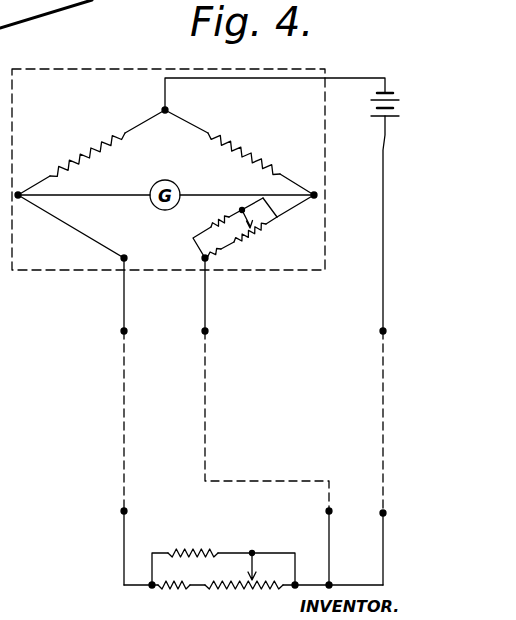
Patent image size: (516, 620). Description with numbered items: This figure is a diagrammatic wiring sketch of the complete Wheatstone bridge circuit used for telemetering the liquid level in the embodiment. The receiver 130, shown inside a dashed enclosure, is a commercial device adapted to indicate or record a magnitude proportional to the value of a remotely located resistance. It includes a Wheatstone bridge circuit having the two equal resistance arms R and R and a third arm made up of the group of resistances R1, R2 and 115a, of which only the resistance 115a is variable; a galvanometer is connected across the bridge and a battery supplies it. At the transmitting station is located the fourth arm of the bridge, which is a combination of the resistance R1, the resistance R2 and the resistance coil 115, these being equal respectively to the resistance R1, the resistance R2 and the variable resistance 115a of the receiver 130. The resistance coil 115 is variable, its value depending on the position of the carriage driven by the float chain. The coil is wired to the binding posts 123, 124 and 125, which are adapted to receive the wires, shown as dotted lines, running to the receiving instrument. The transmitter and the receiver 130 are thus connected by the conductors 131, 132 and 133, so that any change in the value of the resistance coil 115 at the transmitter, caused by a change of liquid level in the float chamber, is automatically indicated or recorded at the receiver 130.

The receiver 130 is at (84, 68).
The equal resistance arms R is at (84, 150).
The resistance R1 is at (215, 254).
The resistance R2 is at (210, 218).
The variable resistance 115a is at (254, 228).
The resistance coil 115 is at (240, 586).
The conductor 131 is at (123, 313).
The conductor 132 is at (207, 318).
The conductor 133 is at (383, 300).
The binding post 123 is at (122, 511).
The binding post 124 is at (327, 511).
The binding post 125 is at (381, 512).